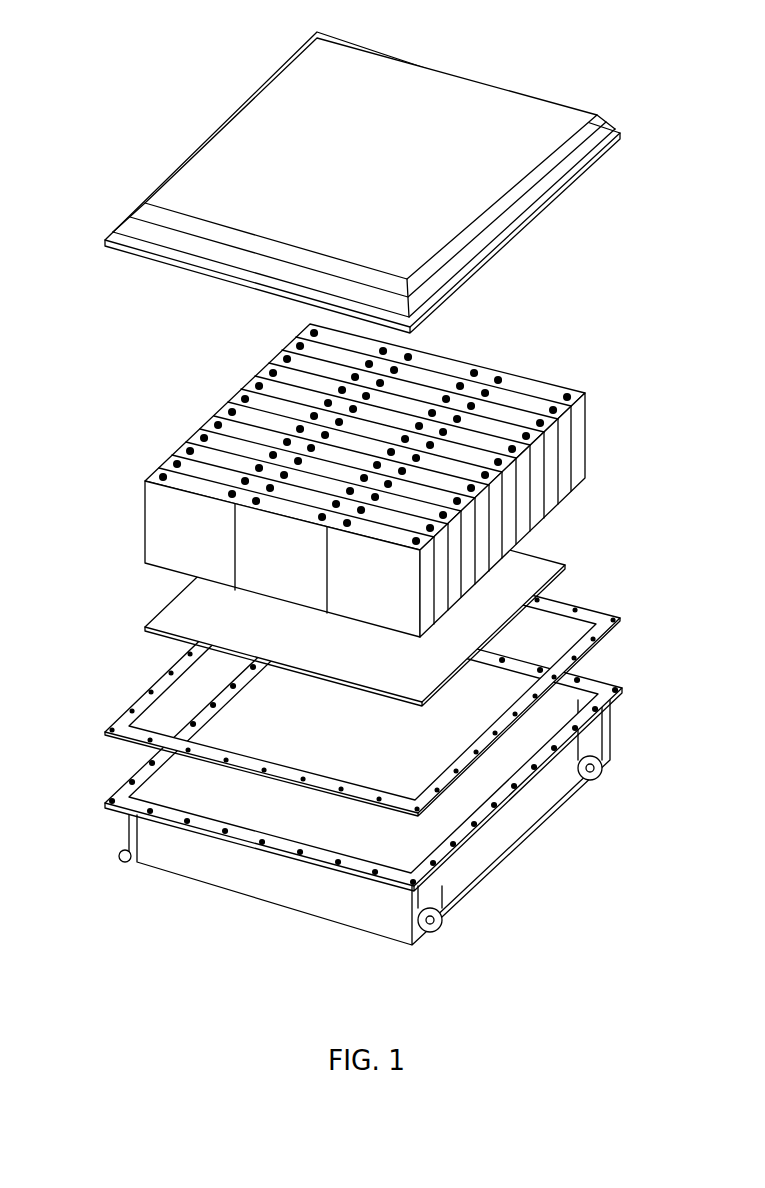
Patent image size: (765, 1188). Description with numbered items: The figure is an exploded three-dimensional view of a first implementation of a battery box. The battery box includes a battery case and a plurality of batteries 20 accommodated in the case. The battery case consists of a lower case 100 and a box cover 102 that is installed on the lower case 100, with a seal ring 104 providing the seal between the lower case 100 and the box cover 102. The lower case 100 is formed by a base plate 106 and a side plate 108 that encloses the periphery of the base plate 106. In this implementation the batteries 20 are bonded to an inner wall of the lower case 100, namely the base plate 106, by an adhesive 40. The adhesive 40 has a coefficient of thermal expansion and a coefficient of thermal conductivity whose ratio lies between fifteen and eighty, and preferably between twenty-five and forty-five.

The lower case 100 is at (349, 777).
The box cover 102 is at (482, 103).
The seal ring 104 is at (700, 567).
The base plate 106 is at (82, 601).
The side plate 108 is at (245, 987).
The batteries 20 is at (665, 385).
The adhesive 40 is at (645, 492).